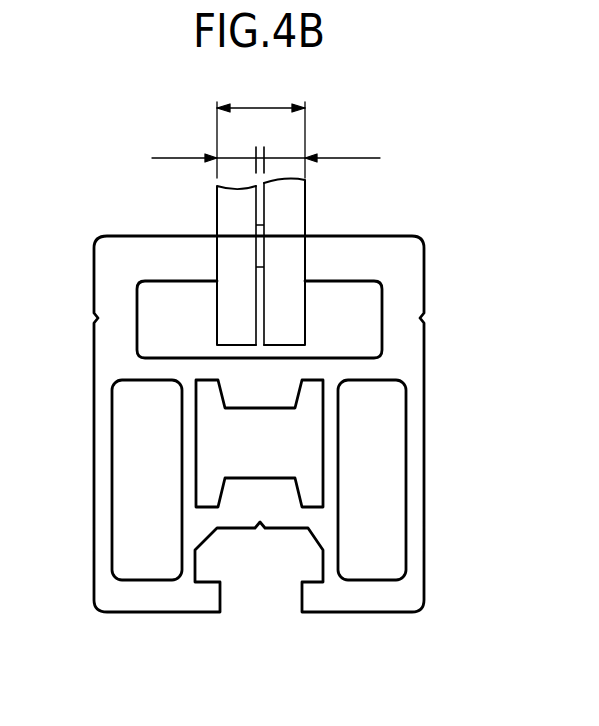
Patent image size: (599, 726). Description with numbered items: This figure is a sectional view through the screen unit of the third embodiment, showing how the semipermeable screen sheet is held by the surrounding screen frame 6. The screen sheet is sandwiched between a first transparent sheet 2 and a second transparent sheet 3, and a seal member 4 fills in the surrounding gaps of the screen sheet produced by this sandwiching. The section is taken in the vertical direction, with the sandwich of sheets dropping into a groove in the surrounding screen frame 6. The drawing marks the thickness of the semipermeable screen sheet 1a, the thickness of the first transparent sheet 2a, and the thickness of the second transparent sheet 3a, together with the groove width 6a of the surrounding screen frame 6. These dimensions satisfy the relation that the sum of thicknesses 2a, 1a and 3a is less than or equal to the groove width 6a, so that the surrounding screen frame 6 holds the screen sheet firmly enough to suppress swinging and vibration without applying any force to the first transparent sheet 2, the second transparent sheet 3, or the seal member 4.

The surrounding screen frame 6 is at (423, 488).
The groove width of the surrounding screen frame 6a is at (261, 97).
The first transparent sheet 2 is at (230, 212).
The second transparent sheet 3 is at (288, 210).
The seal member 4 is at (260, 283).
The thickness of the semipermeable screen sheet 1a is at (266, 153).
The thickness of the first transparent sheet 2a is at (228, 157).
The thickness of the second transparent sheet 3a is at (287, 158).